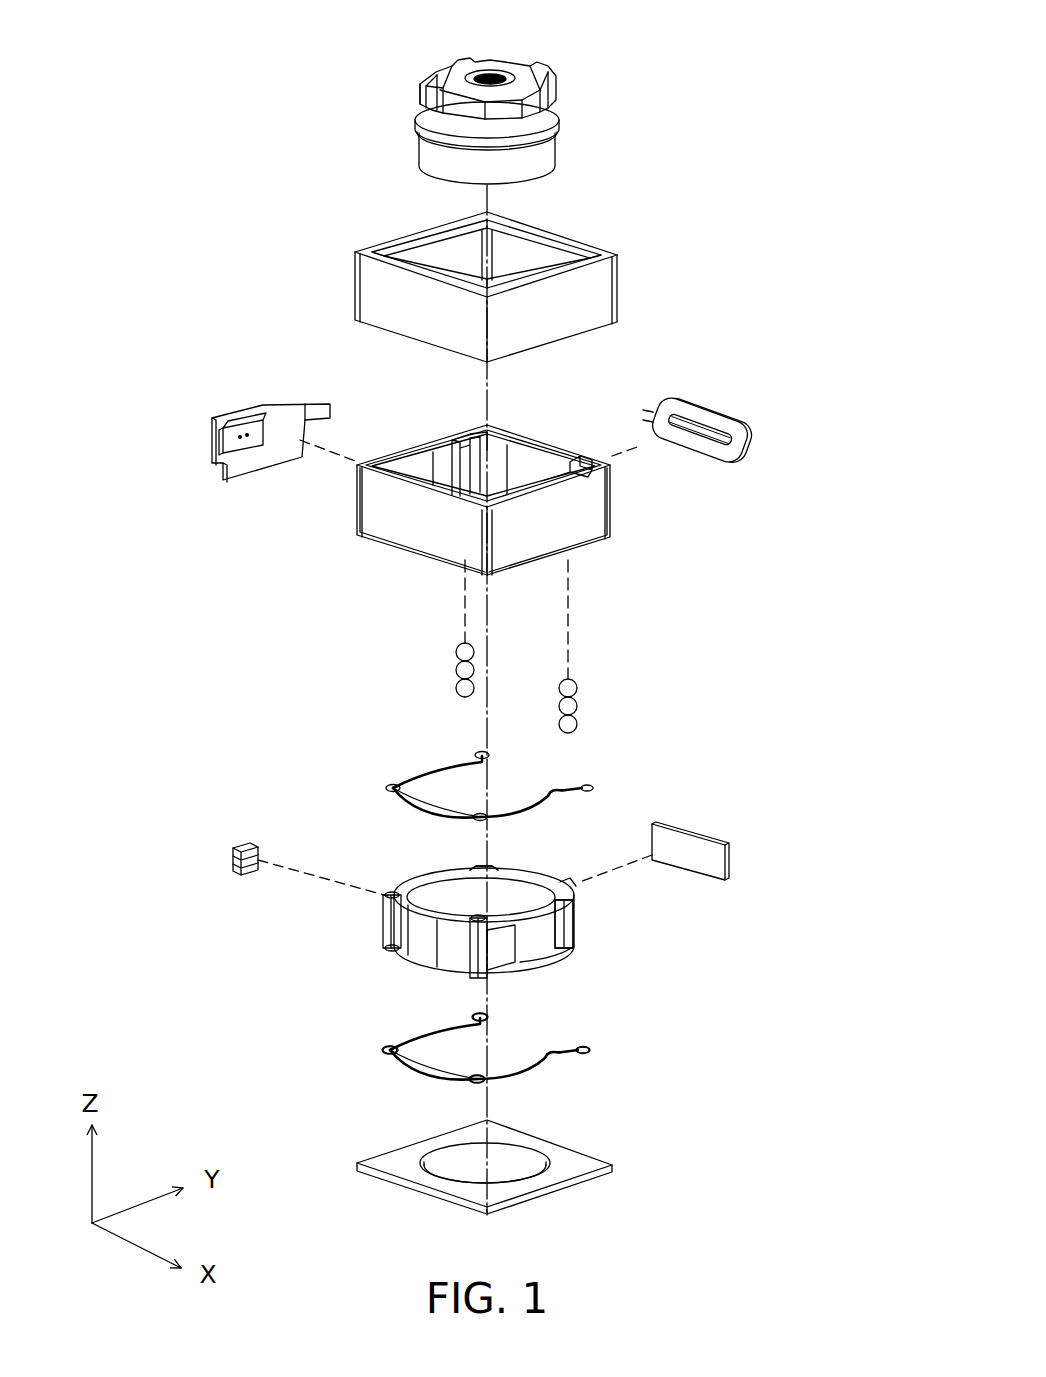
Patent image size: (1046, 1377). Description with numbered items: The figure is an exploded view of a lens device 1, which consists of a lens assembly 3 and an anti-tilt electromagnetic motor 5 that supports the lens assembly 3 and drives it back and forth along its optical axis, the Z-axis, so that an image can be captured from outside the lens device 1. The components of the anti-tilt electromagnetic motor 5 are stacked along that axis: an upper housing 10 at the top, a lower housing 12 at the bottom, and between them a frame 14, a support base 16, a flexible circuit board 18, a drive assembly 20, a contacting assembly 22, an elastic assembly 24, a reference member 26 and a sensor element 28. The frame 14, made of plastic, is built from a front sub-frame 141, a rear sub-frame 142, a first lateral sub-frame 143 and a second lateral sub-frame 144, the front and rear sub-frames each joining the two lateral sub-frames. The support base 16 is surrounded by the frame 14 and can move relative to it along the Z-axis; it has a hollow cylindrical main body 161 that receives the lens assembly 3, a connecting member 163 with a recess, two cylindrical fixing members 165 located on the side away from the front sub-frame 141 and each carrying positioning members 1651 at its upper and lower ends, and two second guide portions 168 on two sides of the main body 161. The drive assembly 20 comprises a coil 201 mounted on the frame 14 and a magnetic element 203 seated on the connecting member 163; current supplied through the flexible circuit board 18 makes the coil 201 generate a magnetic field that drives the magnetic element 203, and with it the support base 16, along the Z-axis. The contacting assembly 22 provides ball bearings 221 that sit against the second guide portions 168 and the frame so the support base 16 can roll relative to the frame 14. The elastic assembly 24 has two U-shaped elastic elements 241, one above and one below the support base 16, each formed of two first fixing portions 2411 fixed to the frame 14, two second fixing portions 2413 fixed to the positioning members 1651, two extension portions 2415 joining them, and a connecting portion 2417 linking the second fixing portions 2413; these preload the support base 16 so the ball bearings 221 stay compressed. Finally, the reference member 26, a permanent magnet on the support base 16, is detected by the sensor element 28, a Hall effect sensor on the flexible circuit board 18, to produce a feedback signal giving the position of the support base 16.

The lens device 1 is at (305, 65).
The lens assembly 3 is at (563, 71).
The anti-tilt electromagnetic motor 5 is at (600, 238).
The upper housing 10 is at (620, 290).
The lower housing 12 is at (588, 1180).
The frame 14 is at (622, 500).
The support base 16 is at (582, 912).
The flexible circuit board 18 is at (237, 410).
The drive assembly 20 is at (718, 392).
The contacting assembly 22 is at (588, 672).
The elastic assembly 24 is at (625, 778).
The reference member 26 is at (235, 860).
The sensor element 28 is at (228, 441).
The front sub-frame 141 is at (538, 443).
The rear sub-frame 142 is at (388, 528).
The first lateral sub-frame 143 is at (438, 445).
The second lateral sub-frame 144 is at (592, 528).
The main body 161 is at (548, 962).
The connecting member 163 is at (505, 868).
The fixing members 165 is at (383, 926).
The second guide portions 168 is at (427, 866).
The coil 201 is at (752, 446).
The magnetic element 203 is at (730, 861).
The ball bearings 221 is at (455, 668).
The elastic elements 241 is at (397, 782).
The positioning members 1651 is at (390, 890).
The first fixing portions 2411 is at (590, 1052).
The second fixing portions 2413 is at (470, 1083).
The extension portions 2415 is at (515, 1082).
The connecting portion 2417 is at (395, 1056).